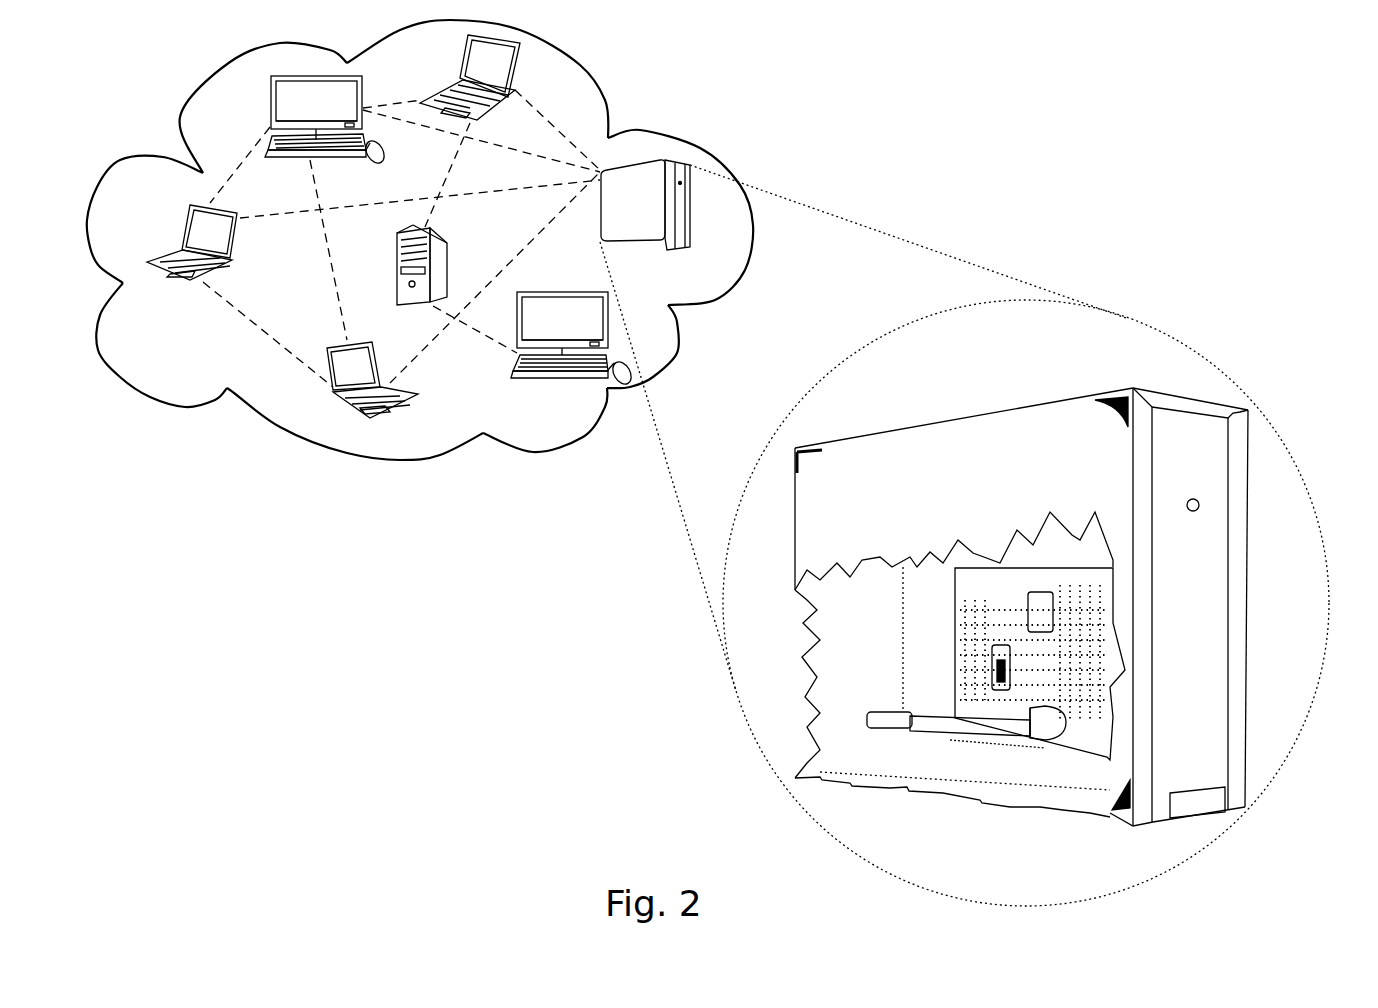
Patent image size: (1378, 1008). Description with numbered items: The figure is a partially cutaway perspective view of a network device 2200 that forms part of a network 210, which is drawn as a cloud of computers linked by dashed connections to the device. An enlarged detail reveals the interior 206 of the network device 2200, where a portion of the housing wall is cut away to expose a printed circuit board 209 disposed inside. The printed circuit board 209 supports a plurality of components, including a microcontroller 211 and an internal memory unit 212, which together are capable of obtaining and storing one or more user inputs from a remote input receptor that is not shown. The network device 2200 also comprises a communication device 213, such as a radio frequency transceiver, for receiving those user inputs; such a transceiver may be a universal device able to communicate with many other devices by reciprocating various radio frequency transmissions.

The network 210 is at (640, 99).
The network device 2200 is at (680, 207).
The interior 206 is at (840, 675).
The printed circuit board 209 is at (967, 590).
The microcontroller 211 is at (1002, 645).
The internal memory unit 212 is at (1042, 592).
The communication device 213 is at (1050, 730).